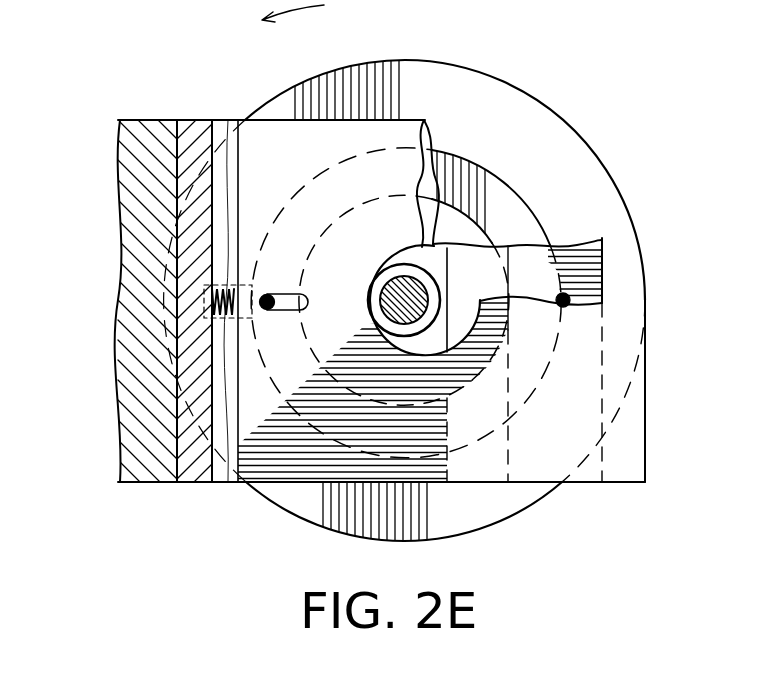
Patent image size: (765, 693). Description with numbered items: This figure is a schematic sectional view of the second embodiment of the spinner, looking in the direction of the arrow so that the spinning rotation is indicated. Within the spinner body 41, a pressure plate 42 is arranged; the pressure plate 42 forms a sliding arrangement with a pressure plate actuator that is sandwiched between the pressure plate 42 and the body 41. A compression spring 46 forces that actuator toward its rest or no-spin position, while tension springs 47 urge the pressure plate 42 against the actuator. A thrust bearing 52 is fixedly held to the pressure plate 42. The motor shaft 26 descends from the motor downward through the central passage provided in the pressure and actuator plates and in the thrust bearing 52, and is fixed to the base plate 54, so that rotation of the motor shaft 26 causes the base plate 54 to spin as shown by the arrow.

The motor shaft 26 is at (396, 278).
The spinner body 41 is at (180, 432).
The pressure plate 42 is at (577, 246).
The compression spring 46 is at (236, 218).
The tension springs 47 is at (266, 296).
The thrust bearing 52 is at (348, 154).
The base plate 54 is at (531, 127).